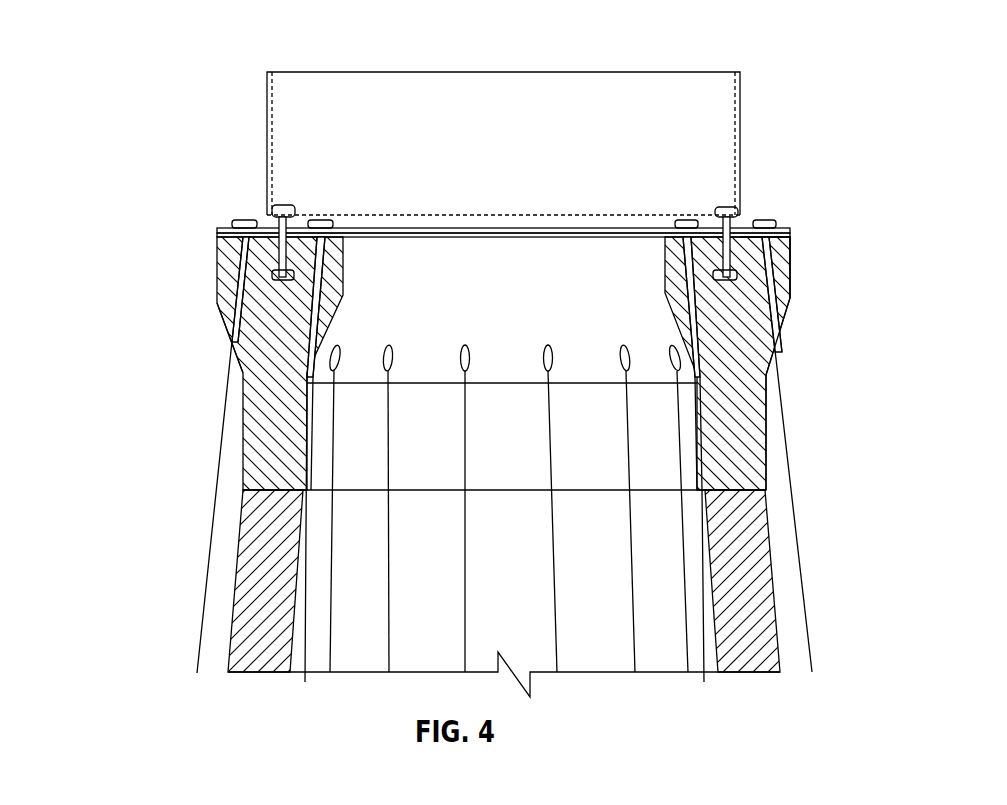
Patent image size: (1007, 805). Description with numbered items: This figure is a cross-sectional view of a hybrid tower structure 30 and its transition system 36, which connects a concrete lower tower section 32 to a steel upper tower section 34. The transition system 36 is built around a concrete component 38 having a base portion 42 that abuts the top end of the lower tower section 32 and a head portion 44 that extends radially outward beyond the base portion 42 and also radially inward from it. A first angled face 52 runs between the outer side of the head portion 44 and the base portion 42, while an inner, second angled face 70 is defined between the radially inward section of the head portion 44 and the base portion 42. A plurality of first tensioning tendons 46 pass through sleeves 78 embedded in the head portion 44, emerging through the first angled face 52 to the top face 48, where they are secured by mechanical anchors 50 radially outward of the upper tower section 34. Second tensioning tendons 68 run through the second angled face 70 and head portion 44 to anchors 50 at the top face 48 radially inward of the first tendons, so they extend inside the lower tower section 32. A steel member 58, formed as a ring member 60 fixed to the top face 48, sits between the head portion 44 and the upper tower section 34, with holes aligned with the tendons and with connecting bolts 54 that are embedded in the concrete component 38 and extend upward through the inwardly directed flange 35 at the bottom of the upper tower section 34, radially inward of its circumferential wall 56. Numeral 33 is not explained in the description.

The tower structure 30 is at (128, 97).
The lower tower section 32 is at (583, 665).
The inner tube wall 33 is at (302, 540).
The upper tower section 34 is at (572, 70).
The flange 35 is at (300, 222).
The transition system 36 is at (115, 283).
The concrete component 38 is at (777, 412).
The base portion 42 is at (767, 455).
The head portion 44 is at (220, 257).
The first tensioning tendons 46 is at (208, 562).
The top face 48 is at (746, 232).
The mechanical anchors 50 is at (243, 220).
The first angled face 52 is at (228, 312).
The connecting bolts 54 is at (288, 250).
The circumferential wall 56 is at (267, 130).
The steel member 58 is at (546, 240).
The ring member 60 is at (508, 228).
The second tensioning tendons 68 is at (307, 615).
The second angled face 70 is at (322, 322).
The sleeves 78 is at (785, 318).